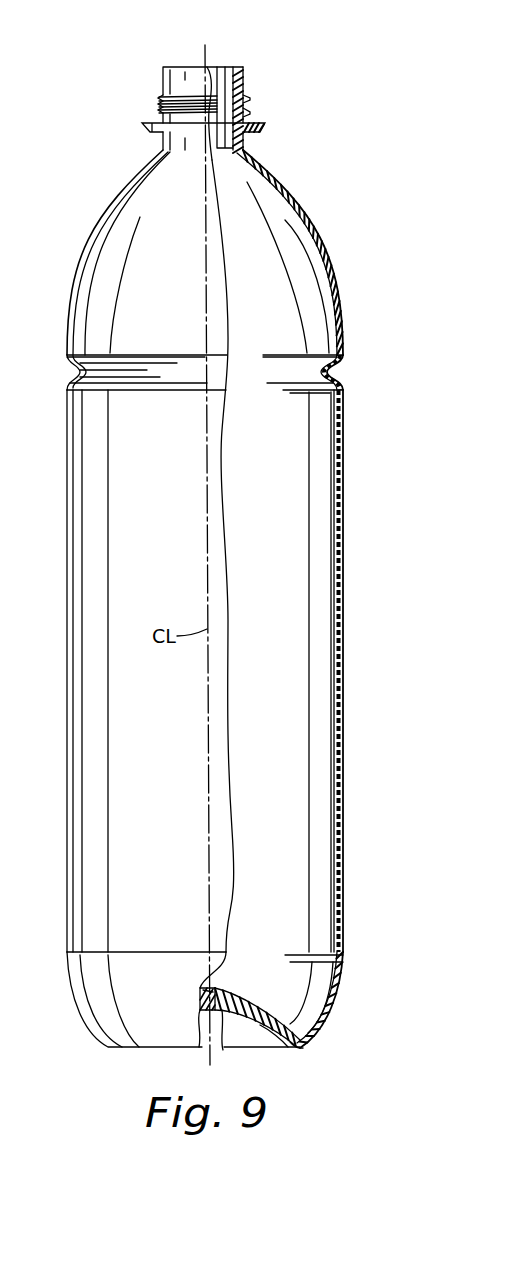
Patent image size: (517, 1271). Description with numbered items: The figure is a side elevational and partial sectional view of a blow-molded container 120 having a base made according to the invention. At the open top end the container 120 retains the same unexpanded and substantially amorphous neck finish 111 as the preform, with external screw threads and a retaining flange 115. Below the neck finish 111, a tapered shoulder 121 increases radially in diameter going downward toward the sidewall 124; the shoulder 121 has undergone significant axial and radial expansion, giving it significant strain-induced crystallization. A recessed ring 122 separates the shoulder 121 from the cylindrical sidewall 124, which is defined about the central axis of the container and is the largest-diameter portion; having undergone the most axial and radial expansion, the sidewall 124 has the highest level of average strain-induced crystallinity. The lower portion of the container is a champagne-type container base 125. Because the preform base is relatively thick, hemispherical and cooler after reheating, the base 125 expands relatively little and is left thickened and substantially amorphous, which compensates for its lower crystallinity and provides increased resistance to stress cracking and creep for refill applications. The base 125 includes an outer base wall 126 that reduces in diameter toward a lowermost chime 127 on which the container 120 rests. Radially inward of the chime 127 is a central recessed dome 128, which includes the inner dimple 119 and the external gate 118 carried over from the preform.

The neck finish 111 is at (245, 86).
The retaining flange 115 is at (262, 128).
The external gate 118 is at (223, 1050).
The inner dimple 119 is at (213, 995).
The container 120 is at (63, 416).
The tapered shoulder 121 is at (302, 207).
The recessed ring 122 is at (337, 369).
The sidewall 124 is at (344, 563).
The container base 125 is at (345, 1021).
The outer base wall 126 is at (340, 999).
The chime 127 is at (304, 1050).
The central recessed dome 128 is at (265, 1022).